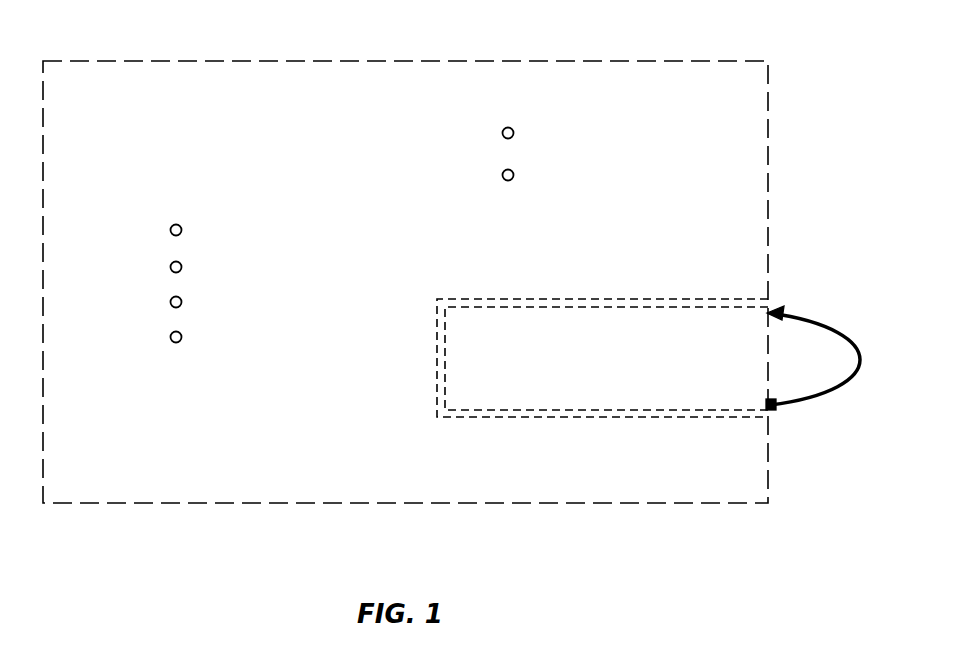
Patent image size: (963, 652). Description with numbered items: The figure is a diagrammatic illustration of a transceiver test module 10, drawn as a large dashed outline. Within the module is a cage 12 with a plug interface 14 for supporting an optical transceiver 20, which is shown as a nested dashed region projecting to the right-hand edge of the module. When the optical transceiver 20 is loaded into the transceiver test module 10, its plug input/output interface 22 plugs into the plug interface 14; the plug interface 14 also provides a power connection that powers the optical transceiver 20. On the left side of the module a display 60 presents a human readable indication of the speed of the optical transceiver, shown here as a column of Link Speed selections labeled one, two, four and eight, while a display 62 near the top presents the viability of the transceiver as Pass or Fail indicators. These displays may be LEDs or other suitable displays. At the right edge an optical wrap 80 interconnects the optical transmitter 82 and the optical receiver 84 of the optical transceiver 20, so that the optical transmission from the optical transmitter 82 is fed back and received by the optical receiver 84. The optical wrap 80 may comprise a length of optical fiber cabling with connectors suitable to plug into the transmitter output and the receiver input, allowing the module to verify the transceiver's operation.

The transceiver test module 10 is at (243, 62).
The cage 12 is at (468, 298).
The plug interface 14 is at (441, 409).
The optical transceiver 20 is at (590, 391).
The plug input/output interface 22 is at (488, 350).
The display 60 is at (240, 268).
The display 62 is at (489, 153).
The optical wrap 80 is at (821, 366).
The optical transmitter 82 is at (781, 310).
The optical receiver 84 is at (773, 410).